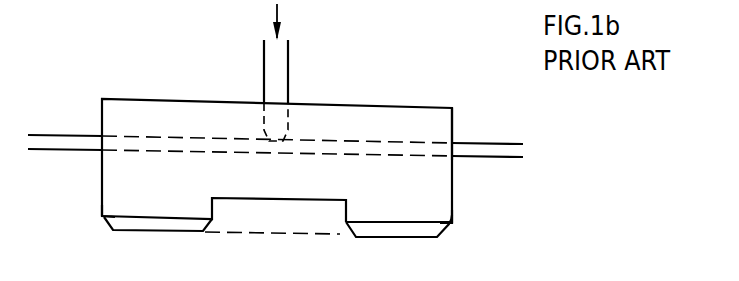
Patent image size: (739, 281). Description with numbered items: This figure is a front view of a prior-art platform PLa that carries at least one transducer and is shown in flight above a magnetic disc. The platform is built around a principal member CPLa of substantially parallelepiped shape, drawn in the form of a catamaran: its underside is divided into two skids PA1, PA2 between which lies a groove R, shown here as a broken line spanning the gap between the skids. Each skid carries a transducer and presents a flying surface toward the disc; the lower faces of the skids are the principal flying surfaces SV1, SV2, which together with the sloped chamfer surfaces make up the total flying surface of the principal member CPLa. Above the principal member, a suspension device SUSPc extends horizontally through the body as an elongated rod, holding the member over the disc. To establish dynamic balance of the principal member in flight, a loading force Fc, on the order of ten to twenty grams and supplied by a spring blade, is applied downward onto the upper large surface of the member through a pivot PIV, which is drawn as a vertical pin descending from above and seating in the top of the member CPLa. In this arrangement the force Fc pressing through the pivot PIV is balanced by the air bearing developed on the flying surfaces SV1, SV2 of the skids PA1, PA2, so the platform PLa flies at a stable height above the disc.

The principal member CPLa is at (305, 104).
The platform PLa is at (468, 121).
The suspension device SUSPc is at (471, 158).
The pivot PIV is at (263, 68).
The loading force Fc is at (287, 20).
The principal flying surface of the first skid SV1 is at (130, 232).
The principal flying surface of the second skid SV2 is at (365, 238).
The first skid PA1 is at (106, 220).
The second skid PA2 is at (450, 230).
The groove R is at (264, 213).